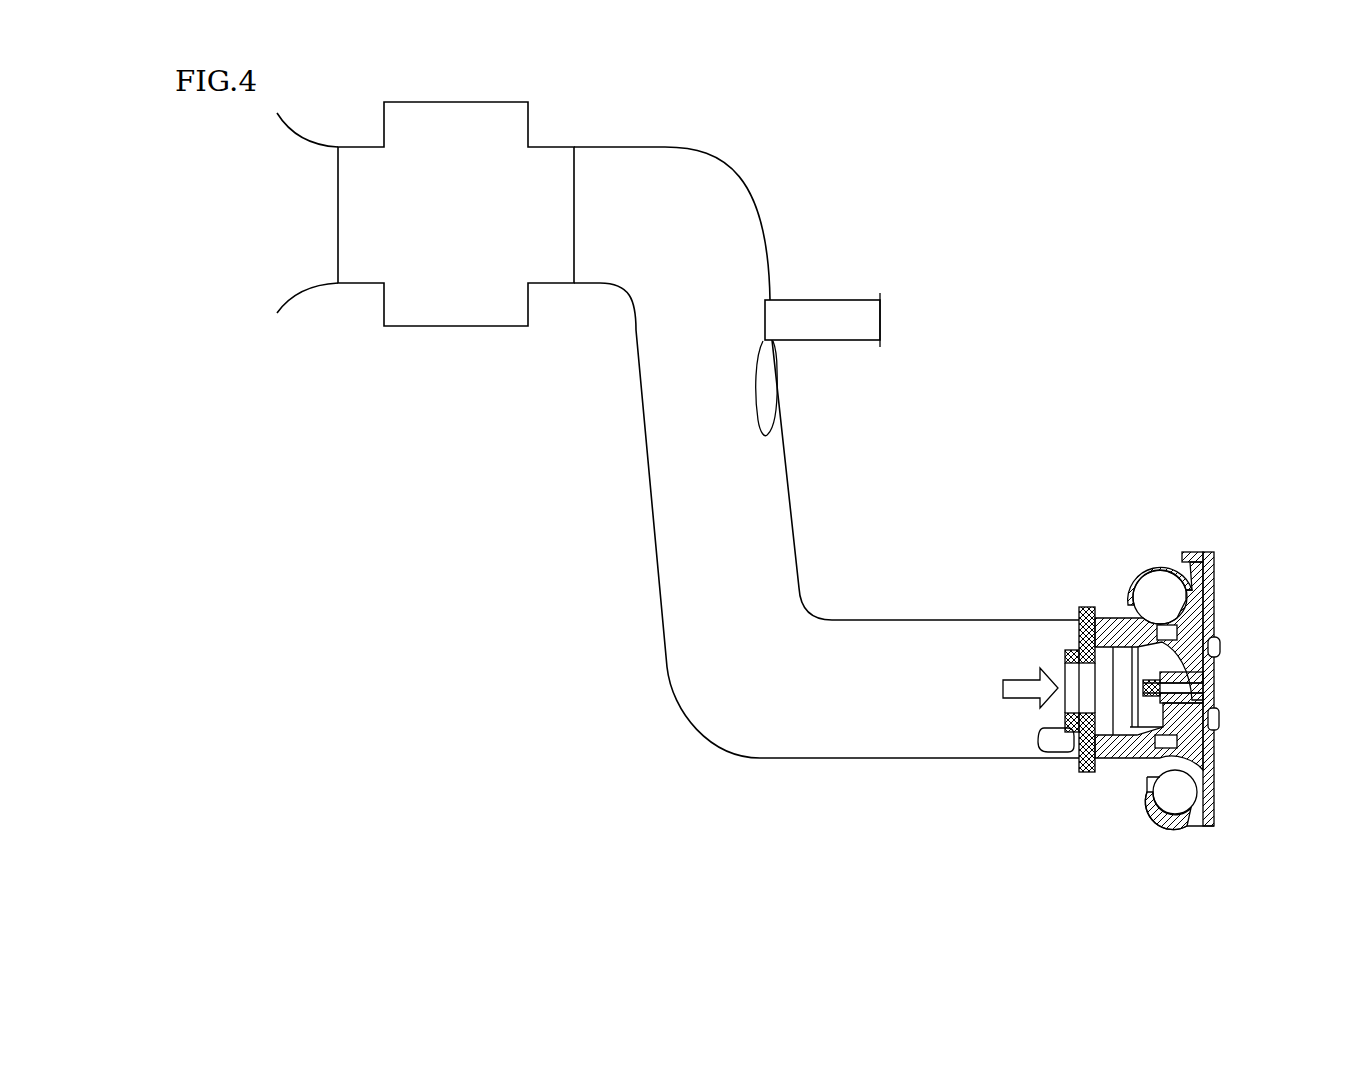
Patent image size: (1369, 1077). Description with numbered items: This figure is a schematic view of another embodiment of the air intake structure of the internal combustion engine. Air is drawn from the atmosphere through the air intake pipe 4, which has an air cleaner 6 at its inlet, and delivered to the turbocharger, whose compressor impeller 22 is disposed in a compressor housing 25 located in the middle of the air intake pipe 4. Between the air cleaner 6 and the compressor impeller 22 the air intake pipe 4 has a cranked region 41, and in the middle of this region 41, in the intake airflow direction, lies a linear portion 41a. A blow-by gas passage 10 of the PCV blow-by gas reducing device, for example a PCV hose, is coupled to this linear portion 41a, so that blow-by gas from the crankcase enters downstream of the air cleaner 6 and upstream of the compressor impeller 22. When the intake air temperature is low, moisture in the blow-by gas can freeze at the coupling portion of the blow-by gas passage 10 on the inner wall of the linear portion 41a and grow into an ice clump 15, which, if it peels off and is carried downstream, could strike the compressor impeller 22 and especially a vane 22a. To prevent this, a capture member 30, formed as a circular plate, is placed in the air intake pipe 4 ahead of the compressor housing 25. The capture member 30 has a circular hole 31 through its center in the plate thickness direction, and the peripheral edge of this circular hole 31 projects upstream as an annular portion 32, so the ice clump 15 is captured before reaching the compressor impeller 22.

The air intake pipe 4 is at (814, 419).
The air cleaner 6 is at (443, 314).
The blow-by gas passage 10 is at (852, 300).
The ice clump 15 is at (772, 395).
The region 41 is at (814, 520).
The linear portion 41a is at (784, 483).
The capture member 30 is at (1027, 658).
The circular hole 31 is at (1068, 663).
The annular portion 32 is at (1065, 719).
The compressor impeller 22 is at (1198, 652).
The vane 22a is at (1220, 632).
The compressor housing 25 is at (1162, 558).